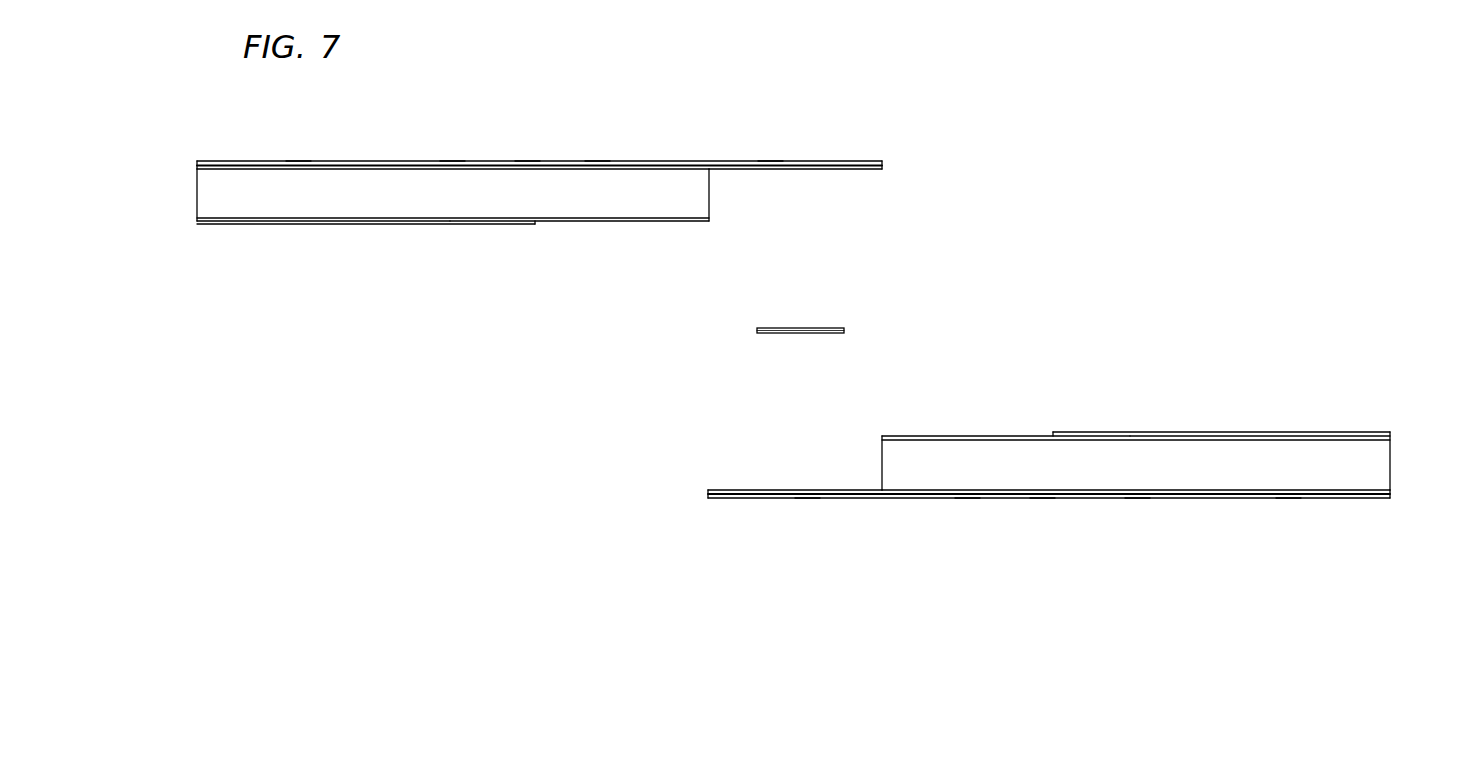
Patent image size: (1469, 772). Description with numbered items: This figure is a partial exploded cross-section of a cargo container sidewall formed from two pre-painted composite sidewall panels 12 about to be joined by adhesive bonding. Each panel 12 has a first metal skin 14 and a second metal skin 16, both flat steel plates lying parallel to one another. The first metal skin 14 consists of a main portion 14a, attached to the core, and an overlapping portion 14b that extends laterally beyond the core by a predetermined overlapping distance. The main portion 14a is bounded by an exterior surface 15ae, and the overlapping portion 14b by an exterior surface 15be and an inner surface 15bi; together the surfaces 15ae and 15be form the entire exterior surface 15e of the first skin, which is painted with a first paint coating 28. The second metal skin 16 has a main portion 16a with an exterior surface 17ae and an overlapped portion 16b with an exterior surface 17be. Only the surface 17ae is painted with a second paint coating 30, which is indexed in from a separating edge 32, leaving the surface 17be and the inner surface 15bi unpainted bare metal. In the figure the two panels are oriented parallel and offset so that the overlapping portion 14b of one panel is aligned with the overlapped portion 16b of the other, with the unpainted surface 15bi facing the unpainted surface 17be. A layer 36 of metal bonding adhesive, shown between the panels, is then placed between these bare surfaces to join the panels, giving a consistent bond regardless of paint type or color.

The composite sidewall panel 12 is at (1327, 552).
The first metal skin 14 is at (358, 161).
The main portion of the first metal skin 14a is at (220, 160).
The overlapping portion of the first metal skin 14b is at (843, 160).
The exterior surface of the first metal skin 15e is at (527, 160).
The exterior surface of the main portion 15ae is at (597, 160).
The exterior surface of the overlapping portion 15be is at (770, 160).
The inner surface of the overlapping portion 15bi is at (862, 172).
The second metal skin 16 is at (607, 222).
The main portion of the second metal skin 16a is at (225, 225).
The overlapped portion of the second metal skin 16b is at (683, 223).
The exterior surface of the main portion of the second metal skin 17ae is at (288, 225).
The exterior surface of the overlapped portion 17be is at (643, 223).
The first paint coating 28 is at (452, 160).
The second paint coating 30 is at (448, 225).
The separating edge 32 is at (538, 225).
The layer of adhesive 36 is at (844, 331).